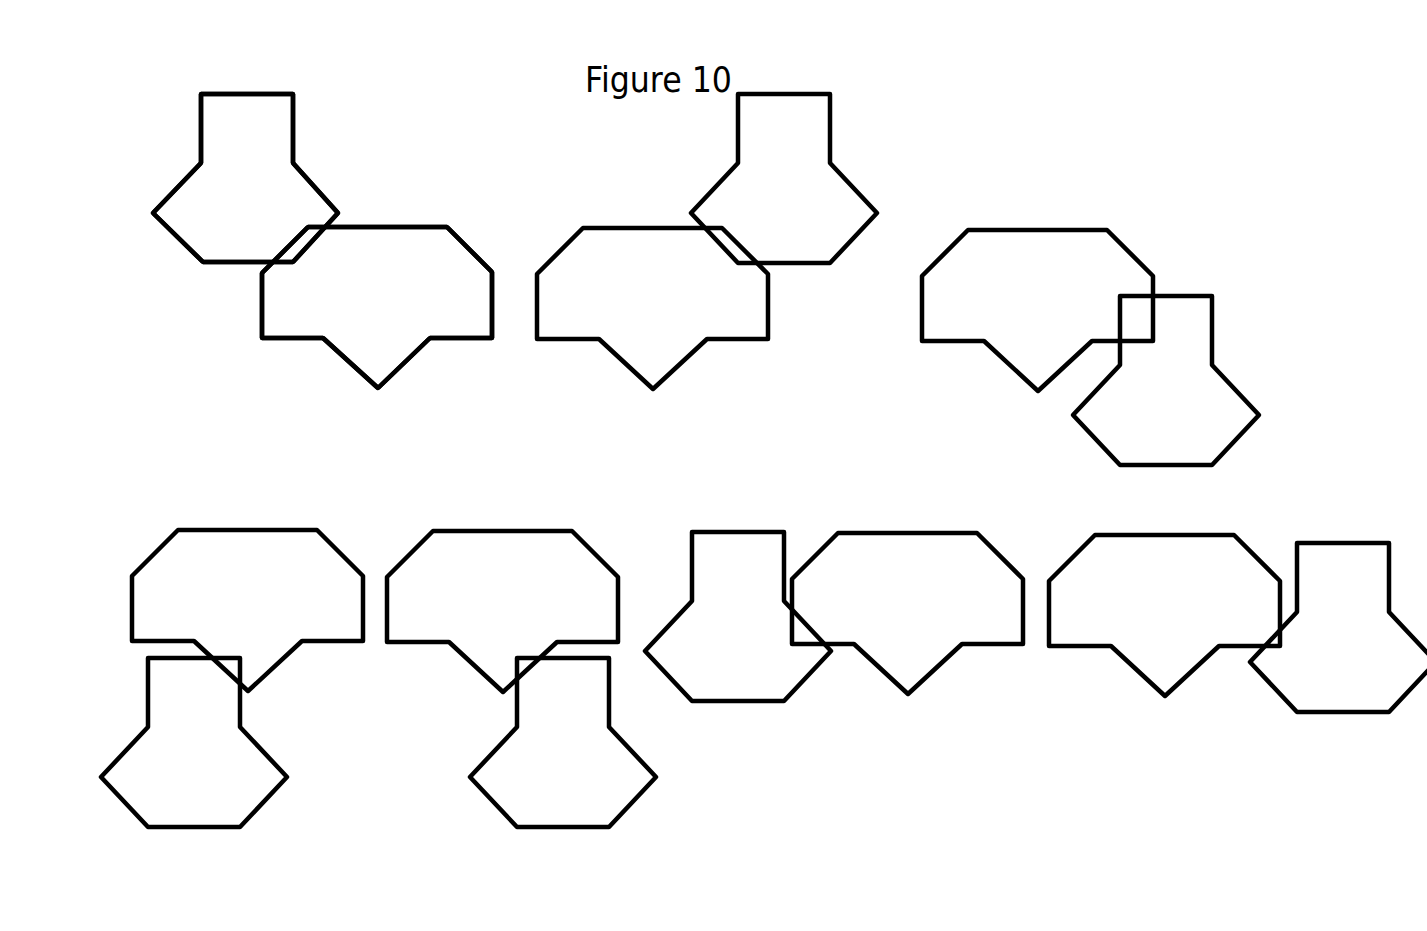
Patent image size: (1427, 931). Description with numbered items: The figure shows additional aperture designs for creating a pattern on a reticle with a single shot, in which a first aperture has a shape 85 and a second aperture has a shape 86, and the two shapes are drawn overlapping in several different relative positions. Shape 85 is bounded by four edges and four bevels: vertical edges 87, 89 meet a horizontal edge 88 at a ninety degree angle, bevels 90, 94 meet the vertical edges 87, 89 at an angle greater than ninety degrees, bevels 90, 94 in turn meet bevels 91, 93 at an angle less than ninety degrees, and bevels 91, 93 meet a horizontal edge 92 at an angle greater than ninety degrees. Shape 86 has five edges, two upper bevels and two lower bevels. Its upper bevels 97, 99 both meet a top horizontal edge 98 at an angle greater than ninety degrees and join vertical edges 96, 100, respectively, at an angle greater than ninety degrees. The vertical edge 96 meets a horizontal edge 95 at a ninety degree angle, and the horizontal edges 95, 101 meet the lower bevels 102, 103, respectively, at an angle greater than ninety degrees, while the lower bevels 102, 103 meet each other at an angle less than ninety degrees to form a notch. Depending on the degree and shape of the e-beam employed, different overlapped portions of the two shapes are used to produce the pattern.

The shape 85 is at (262, 177).
The shape 86 is at (389, 317).
The vertical edge 87 is at (202, 125).
The horizontal edge 88 is at (250, 92).
The vertical edge 89 is at (297, 125).
The bevel 90 is at (167, 198).
The bevel 91 is at (180, 242).
The horizontal edge 92 is at (215, 265).
The bevel 93 is at (312, 243).
The bevel 94 is at (320, 183).
The horizontal edge 95 is at (448, 333).
The vertical edge 96 is at (497, 302).
The upper bevel 97 is at (462, 230).
The horizontal edge 98 is at (380, 228).
The upper bevel 99 is at (292, 245).
The vertical edge 100 is at (264, 303).
The horizontal edge 101 is at (300, 337).
The lower bevel 102 is at (347, 358).
The lower bevel 103 is at (403, 368).